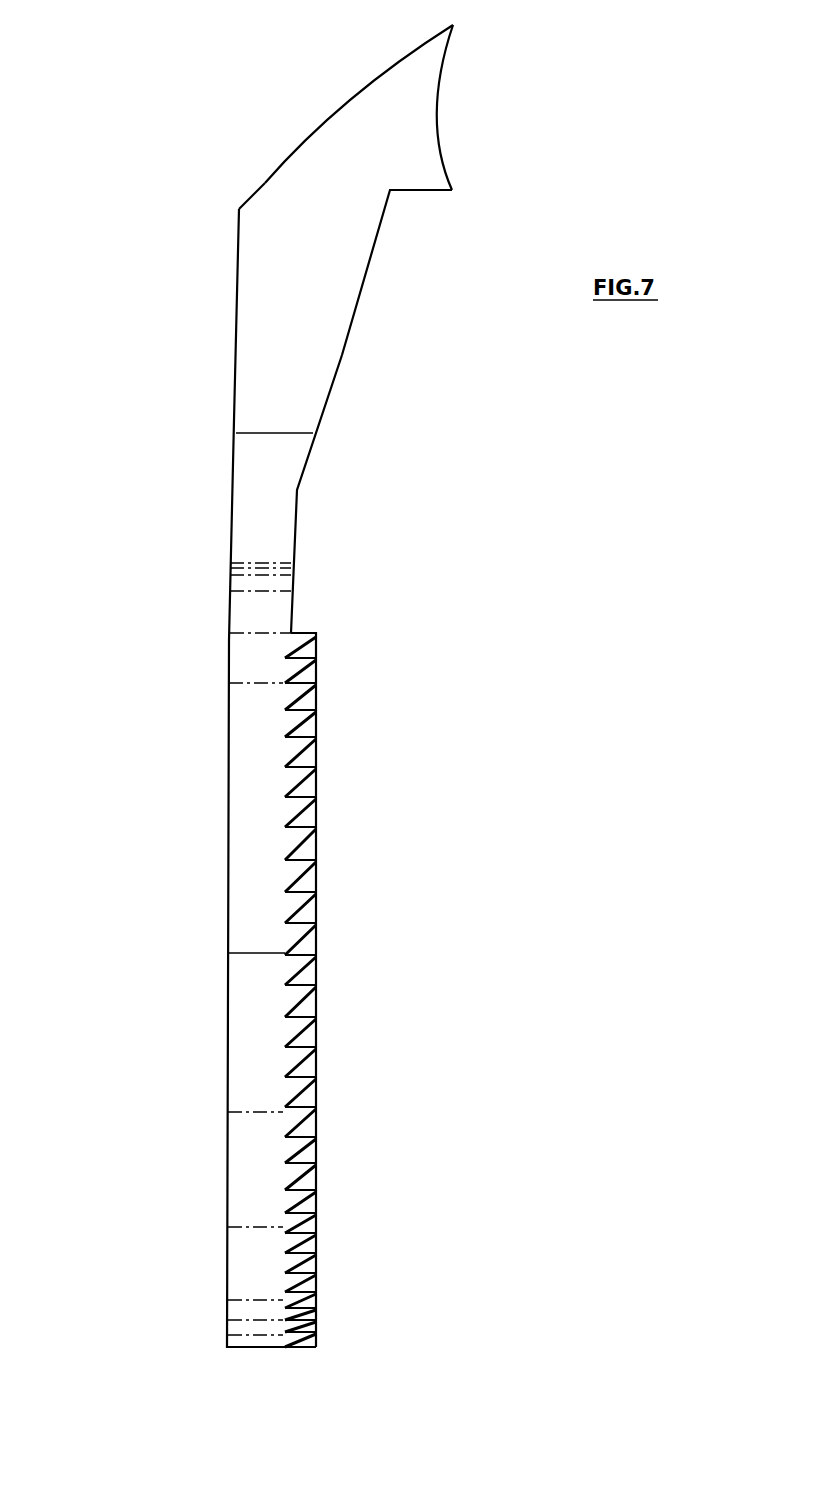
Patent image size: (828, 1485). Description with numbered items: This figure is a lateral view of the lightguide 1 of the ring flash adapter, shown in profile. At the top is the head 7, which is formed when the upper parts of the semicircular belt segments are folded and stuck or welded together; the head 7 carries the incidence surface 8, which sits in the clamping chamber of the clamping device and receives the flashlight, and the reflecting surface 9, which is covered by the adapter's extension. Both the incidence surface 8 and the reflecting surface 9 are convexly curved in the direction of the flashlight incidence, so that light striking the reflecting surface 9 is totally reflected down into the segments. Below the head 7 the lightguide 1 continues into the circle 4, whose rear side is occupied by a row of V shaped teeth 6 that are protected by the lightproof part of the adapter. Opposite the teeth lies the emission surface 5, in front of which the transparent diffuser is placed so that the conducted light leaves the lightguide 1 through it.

The lightguide 1 is at (202, 508).
The circle 4 is at (274, 990).
The emission surface 5 is at (228, 1100).
The V shaped teeth 6 is at (312, 930).
The head 7 is at (336, 190).
The incidence surface 8 is at (437, 118).
The reflecting surface 9 is at (330, 118).